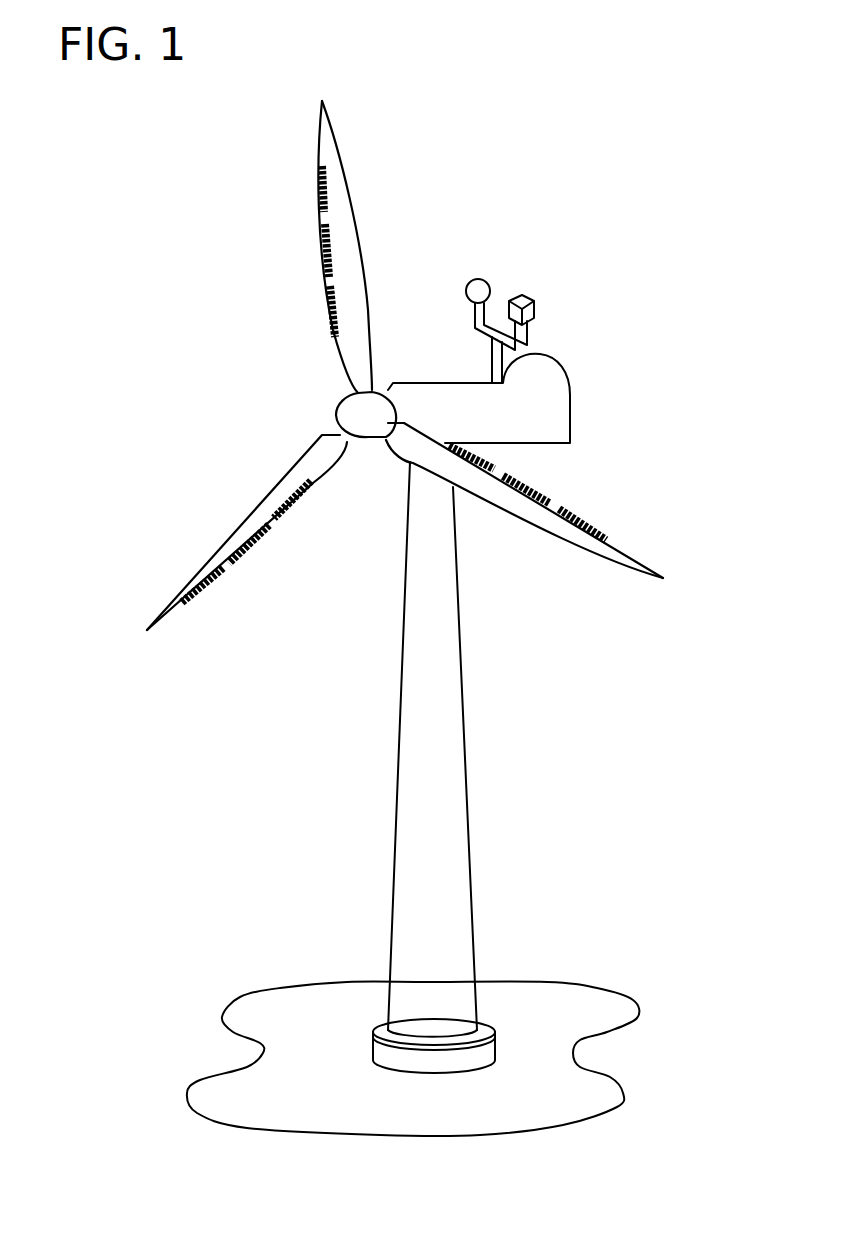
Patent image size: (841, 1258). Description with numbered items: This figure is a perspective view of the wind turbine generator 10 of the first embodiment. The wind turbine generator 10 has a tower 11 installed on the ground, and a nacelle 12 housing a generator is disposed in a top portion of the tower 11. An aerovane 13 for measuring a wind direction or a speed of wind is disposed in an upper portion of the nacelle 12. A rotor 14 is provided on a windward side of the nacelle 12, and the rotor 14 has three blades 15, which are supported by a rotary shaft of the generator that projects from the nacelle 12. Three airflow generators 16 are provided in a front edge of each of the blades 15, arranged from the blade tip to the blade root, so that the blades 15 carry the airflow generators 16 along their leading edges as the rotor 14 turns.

The wind turbine generator 10 is at (661, 170).
The tower 11 is at (458, 745).
The nacelle 12 is at (547, 372).
The aerovane 13 is at (530, 292).
The rotor 14 is at (330, 398).
The blades 15 is at (345, 218).
The airflow generators 16 is at (318, 196).